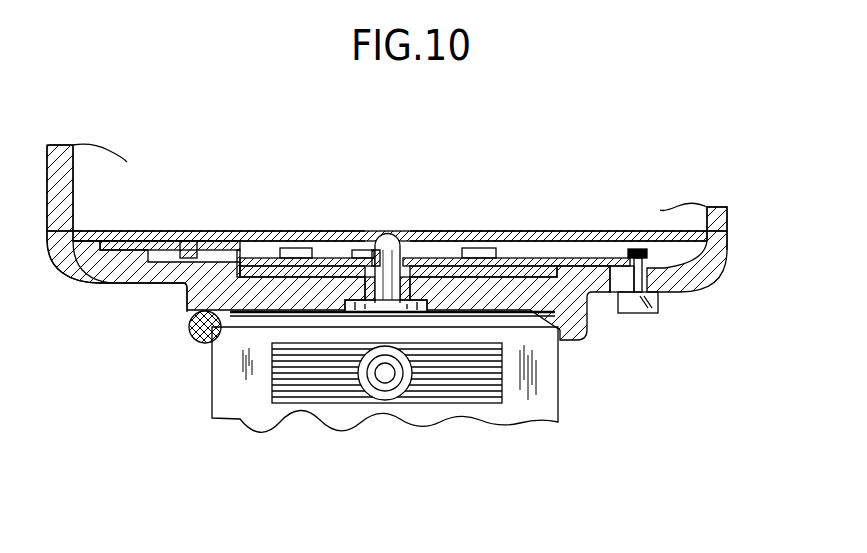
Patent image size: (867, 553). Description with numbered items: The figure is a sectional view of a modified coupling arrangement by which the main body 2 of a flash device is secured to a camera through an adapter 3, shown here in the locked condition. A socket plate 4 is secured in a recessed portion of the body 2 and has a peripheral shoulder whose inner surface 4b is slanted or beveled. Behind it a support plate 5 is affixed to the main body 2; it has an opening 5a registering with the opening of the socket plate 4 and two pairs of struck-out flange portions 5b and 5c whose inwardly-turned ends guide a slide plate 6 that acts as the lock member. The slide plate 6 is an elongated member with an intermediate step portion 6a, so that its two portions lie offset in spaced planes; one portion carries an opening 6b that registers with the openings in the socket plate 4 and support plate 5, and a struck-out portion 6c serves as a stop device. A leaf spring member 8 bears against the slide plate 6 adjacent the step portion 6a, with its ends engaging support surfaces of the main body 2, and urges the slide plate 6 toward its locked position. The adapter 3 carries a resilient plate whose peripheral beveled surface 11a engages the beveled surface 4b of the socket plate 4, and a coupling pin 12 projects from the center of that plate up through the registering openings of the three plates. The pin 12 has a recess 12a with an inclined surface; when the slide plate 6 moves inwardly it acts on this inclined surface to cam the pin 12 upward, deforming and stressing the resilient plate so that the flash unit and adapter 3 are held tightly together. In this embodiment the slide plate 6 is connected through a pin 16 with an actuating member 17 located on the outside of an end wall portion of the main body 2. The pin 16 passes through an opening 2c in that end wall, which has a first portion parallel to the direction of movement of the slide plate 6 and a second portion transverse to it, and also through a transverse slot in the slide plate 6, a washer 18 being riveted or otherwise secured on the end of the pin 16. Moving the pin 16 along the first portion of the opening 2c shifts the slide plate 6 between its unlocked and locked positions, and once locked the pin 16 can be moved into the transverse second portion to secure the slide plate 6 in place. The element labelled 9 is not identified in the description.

The main body 2 is at (723, 262).
The opening 2c is at (624, 272).
The adapter 3 is at (528, 405).
The socket plate 4 is at (572, 336).
The inner surface 4b is at (190, 318).
The support plate 5 is at (545, 262).
The opening 5a is at (360, 262).
The struck-out flange portions 5b is at (290, 250).
The struck-out flange portions 5c is at (478, 252).
The slide plate 6 is at (438, 266).
The step portion 6a is at (250, 245).
The opening 6b is at (408, 263).
The struck-out portion 6c is at (185, 243).
The leaf spring member 8 is at (208, 246).
The wall recess 9 is at (75, 262).
The peripheral beveled surface 11a is at (253, 325).
The coupling pin 12 is at (392, 245).
The recess 12a is at (377, 260).
The pin 16 is at (662, 276).
The actuating member 17 is at (655, 313).
The washer 18 is at (650, 256).